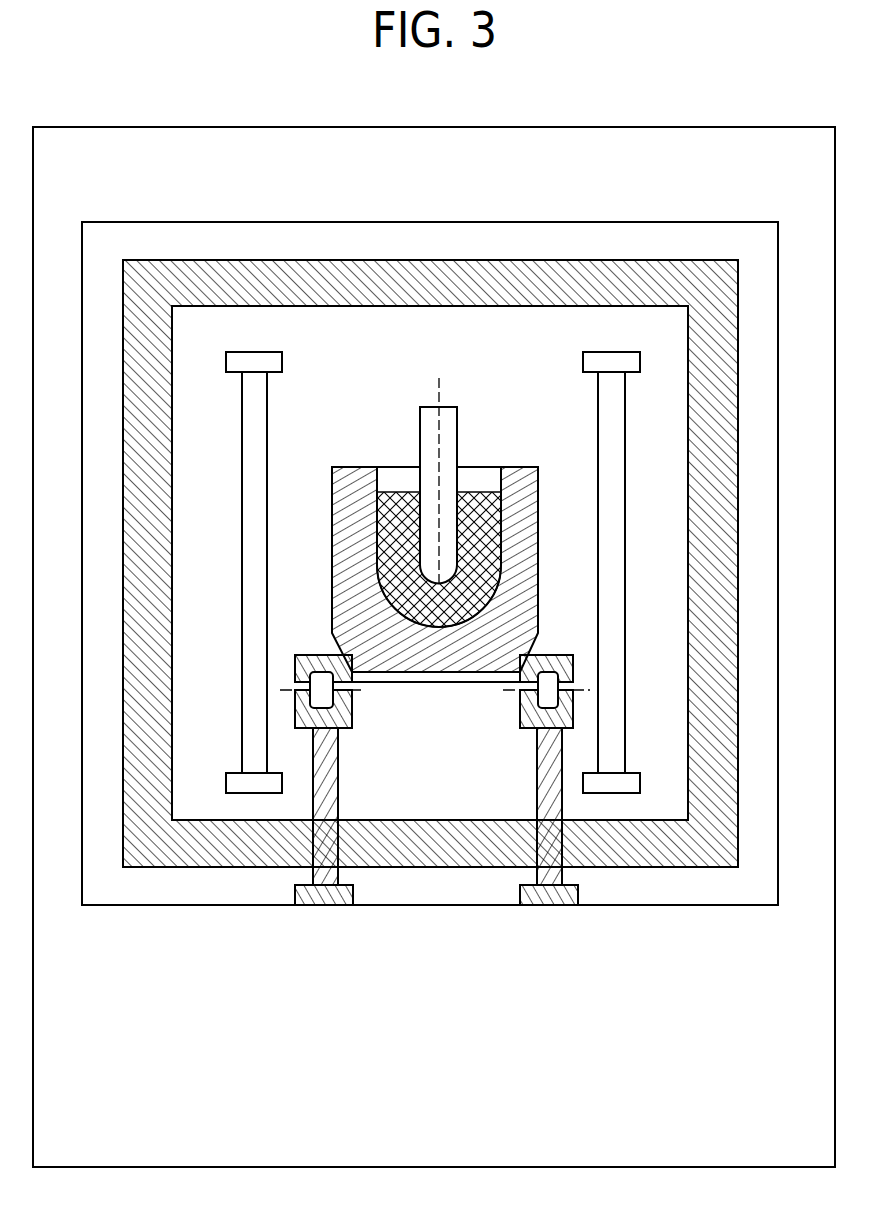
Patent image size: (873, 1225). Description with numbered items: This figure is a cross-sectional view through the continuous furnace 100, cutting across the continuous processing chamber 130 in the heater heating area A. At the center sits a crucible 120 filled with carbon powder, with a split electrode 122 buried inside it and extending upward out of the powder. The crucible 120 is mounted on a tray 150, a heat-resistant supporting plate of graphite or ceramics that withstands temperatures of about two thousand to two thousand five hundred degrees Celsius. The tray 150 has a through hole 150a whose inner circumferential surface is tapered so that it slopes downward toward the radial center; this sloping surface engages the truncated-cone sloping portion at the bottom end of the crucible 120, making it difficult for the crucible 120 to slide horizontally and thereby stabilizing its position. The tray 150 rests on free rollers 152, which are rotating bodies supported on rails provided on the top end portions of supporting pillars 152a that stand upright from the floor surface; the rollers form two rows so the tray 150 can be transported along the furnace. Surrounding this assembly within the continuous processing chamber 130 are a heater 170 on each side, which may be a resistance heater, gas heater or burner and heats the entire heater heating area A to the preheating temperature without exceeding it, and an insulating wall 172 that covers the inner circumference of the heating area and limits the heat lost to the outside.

The continuous furnace 100 is at (90, 127).
The continuous processing chamber 130 is at (133, 252).
The insulating wall 172 is at (347, 308).
The heater 170 is at (268, 402).
The crucible 120 is at (348, 467).
The split electrode 122 is at (458, 447).
The tray 150 is at (431, 756).
The through hole 150a is at (435, 682).
The free roller 152 is at (338, 682).
The supporting pillar 152a is at (338, 752).